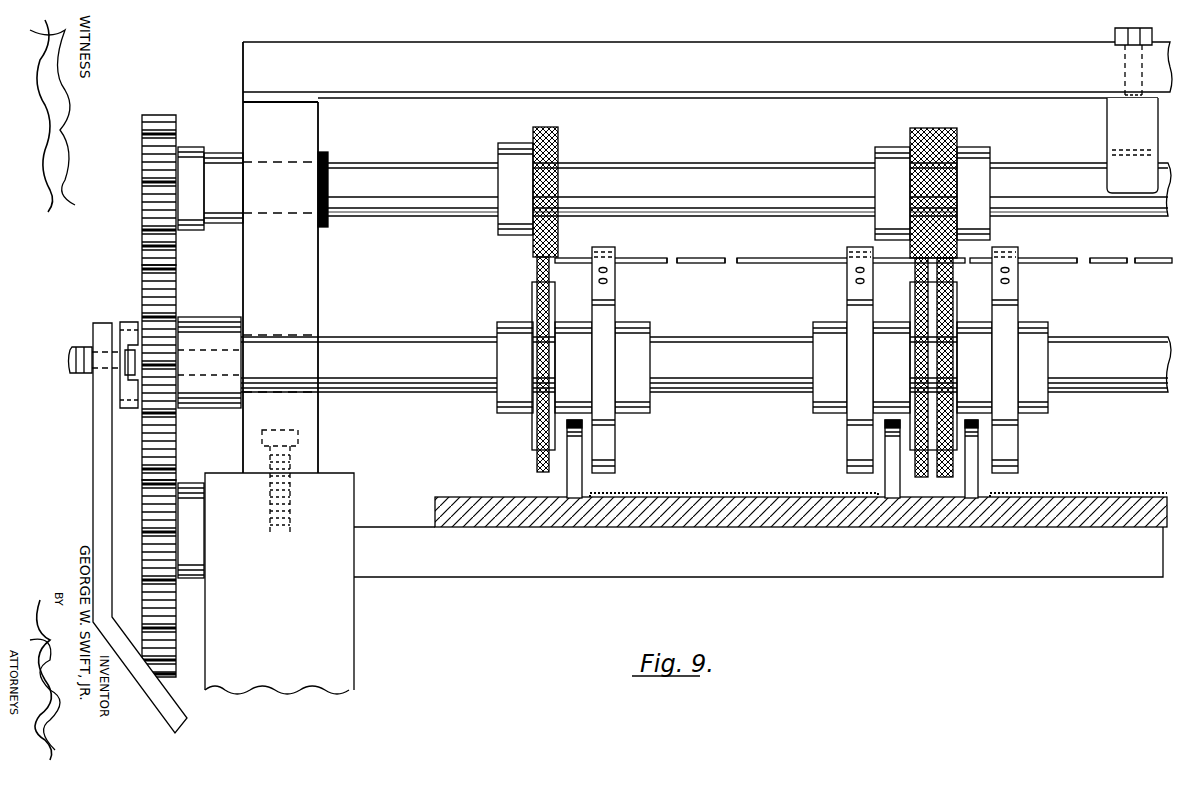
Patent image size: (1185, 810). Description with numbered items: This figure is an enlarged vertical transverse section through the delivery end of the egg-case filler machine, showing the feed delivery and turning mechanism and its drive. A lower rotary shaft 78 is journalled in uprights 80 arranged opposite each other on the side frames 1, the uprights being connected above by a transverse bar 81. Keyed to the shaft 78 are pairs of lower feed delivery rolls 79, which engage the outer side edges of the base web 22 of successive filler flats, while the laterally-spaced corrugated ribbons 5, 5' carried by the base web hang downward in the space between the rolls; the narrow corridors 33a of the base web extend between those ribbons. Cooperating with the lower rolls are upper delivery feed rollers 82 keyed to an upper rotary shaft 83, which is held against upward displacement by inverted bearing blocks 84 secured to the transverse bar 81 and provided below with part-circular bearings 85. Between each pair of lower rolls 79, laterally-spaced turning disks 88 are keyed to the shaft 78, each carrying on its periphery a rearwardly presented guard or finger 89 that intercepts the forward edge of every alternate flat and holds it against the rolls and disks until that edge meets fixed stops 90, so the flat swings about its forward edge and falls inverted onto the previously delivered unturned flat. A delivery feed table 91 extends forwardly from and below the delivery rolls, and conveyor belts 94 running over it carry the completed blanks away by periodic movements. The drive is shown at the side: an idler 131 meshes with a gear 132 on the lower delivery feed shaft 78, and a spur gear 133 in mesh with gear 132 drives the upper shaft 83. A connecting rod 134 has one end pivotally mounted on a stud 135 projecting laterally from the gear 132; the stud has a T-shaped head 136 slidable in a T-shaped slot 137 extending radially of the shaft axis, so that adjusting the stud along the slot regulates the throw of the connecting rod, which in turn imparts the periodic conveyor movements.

The side frames 1 is at (300, 627).
The corrugated ribbon 5 is at (863, 270).
The corrugated ribbon 5' is at (862, 270).
The base web 22 is at (1103, 266).
The corridor 33a is at (732, 266).
The rotary shaft 78 is at (706, 364).
The lower feed delivery rolls 79 is at (533, 441).
The uprights 80 is at (280, 287).
The transverse bar 81 is at (707, 70).
The upper delivery feed rollers 82 is at (551, 142).
The upper rotary shaft 83 is at (744, 189).
The inverted bearing blocks 84 is at (1112, 136).
The part-circular bearings 85 is at (1132, 145).
The turning disks 88 is at (616, 442).
The guard or finger 89 is at (617, 276).
The fixed stops 90 is at (567, 481).
The delivery feed table 91 is at (750, 505).
The conveyor belts 94 is at (716, 497).
The idler 131 is at (172, 645).
The gear 132 is at (148, 440).
The spur gear 133 is at (158, 118).
The connecting rod 134 is at (182, 722).
The stud 135 is at (68, 363).
The T-shaped head 136 is at (178, 359).
The T-shaped slot 137 is at (132, 338).